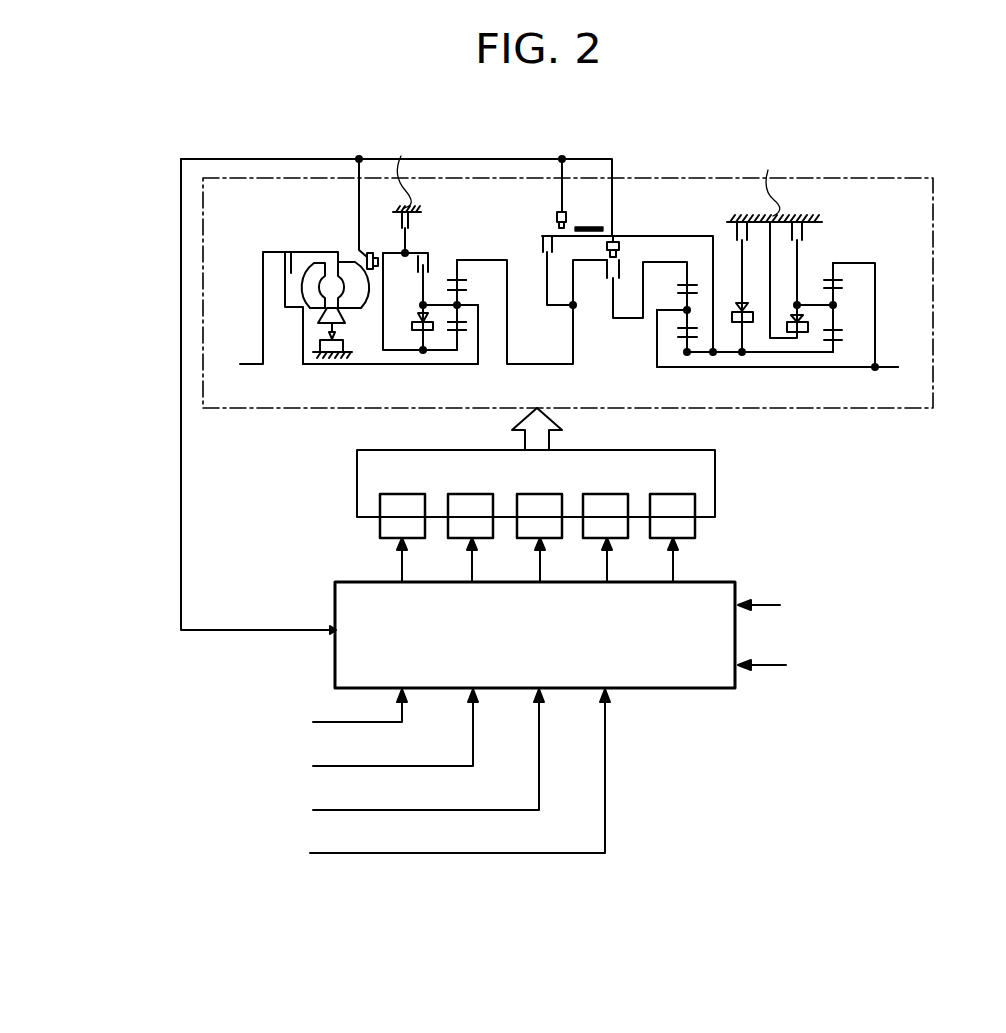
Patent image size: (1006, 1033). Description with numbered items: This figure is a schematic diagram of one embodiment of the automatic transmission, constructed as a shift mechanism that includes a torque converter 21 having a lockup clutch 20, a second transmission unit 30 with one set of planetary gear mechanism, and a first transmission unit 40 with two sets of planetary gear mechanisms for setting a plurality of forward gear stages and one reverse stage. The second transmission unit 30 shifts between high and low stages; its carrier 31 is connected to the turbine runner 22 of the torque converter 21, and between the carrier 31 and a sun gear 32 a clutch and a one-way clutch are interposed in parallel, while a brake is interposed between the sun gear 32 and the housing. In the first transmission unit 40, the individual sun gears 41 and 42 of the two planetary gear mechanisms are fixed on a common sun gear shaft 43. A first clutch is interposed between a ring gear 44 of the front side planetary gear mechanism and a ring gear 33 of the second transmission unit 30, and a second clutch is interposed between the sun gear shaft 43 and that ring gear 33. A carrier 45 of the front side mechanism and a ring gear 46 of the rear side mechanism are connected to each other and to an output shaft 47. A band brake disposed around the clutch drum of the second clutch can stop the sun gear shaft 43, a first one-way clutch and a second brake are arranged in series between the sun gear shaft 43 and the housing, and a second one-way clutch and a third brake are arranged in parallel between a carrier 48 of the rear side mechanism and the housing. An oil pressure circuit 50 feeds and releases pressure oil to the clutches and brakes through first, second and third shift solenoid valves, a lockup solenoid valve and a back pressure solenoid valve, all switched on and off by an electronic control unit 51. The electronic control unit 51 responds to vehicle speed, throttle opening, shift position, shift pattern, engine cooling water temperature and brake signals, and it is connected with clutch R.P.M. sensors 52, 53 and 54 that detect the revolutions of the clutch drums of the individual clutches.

The lockup clutch 20 is at (280, 262).
The torque converter 21 is at (304, 232).
The turbine runner 22 is at (303, 299).
The second transmission unit 30 is at (475, 194).
The carrier 31 is at (462, 306).
The sun gear 32 is at (465, 332).
The ring gear 33 is at (458, 278).
The first transmission unit 40 is at (843, 197).
The sun gear 41 is at (683, 338).
The sun gear 42 is at (840, 342).
The sun gear shaft 43 is at (782, 353).
The ring gear 44 is at (693, 283).
The carrier 45 is at (663, 308).
The ring gear 46 is at (833, 278).
The output shaft 47 is at (878, 372).
The carrier 48 is at (834, 305).
The oil pressure circuit 50 is at (707, 472).
The electronic control unit 51 is at (683, 688).
The clutch R.P.M. sensor 52 is at (366, 260).
The clutch R.P.M. sensor 53 is at (568, 212).
The clutch R.P.M. sensor 54 is at (618, 240).